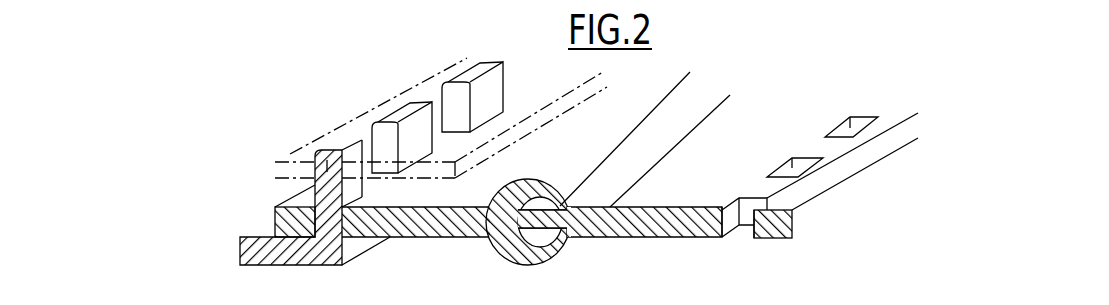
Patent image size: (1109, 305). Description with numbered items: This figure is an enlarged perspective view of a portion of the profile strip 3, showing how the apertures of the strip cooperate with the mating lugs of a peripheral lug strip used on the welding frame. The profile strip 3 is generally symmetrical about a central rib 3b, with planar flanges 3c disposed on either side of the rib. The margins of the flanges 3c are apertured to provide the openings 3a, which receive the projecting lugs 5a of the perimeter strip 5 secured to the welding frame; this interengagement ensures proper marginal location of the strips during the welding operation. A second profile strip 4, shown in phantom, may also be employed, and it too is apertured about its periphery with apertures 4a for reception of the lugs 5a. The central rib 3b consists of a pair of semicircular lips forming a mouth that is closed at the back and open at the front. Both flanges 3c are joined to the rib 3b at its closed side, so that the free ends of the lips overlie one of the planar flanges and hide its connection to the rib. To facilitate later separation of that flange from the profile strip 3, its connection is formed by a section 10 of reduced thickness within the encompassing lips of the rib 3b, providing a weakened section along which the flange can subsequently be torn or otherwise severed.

The profile strip 3 is at (450, 248).
The openings 3a is at (833, 132).
The central rib 3b is at (605, 150).
The planar flanges 3c is at (659, 223).
The second profile strip 4 is at (303, 147).
The apertures of second profile strip 4a is at (458, 87).
The perimeter strip 5 is at (282, 250).
The projecting lugs 5a is at (385, 138).
The section of reduced thickness 10 is at (507, 243).